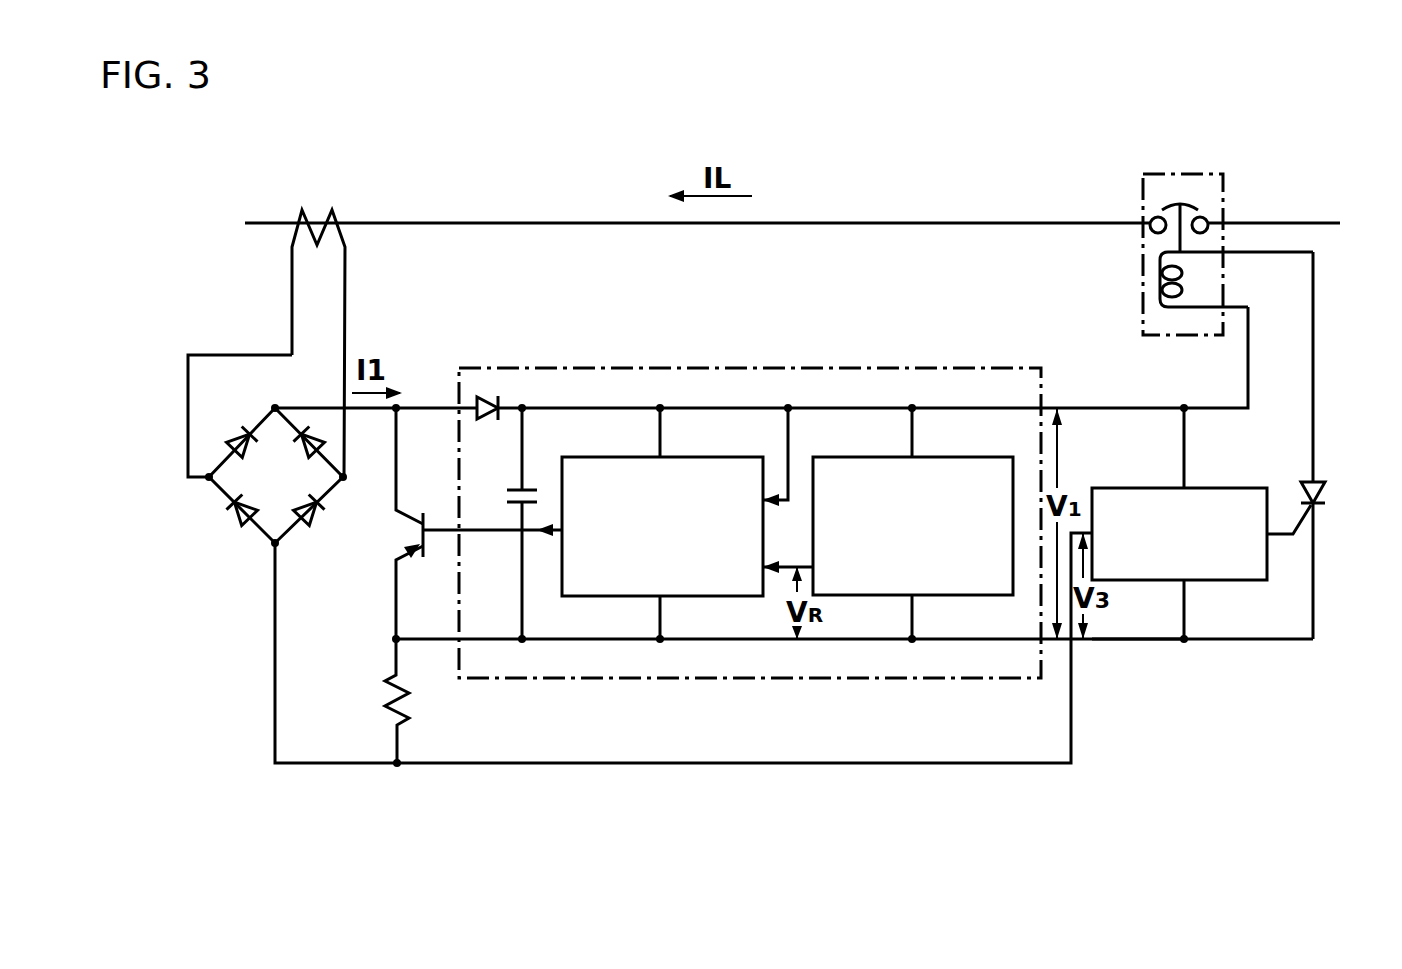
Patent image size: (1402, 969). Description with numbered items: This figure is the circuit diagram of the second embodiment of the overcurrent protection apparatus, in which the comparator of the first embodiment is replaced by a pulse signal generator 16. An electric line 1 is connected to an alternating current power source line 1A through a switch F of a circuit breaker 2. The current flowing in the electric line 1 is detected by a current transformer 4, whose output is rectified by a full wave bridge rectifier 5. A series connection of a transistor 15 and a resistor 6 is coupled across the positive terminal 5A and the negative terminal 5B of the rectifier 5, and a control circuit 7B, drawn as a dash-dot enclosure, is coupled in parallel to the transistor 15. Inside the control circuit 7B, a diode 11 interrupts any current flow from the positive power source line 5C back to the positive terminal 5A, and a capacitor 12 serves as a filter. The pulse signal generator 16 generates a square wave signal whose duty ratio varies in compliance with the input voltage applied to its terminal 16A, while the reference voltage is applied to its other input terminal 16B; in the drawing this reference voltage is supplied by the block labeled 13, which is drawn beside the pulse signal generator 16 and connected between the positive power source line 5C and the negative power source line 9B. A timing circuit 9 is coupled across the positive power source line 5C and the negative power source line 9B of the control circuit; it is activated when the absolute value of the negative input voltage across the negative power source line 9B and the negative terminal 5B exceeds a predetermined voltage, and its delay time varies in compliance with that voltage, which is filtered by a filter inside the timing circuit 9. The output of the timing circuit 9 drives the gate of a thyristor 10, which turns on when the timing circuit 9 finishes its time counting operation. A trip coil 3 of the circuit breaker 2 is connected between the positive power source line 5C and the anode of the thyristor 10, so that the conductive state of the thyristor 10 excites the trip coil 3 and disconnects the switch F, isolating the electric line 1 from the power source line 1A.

The electric line 1 is at (910, 223).
The power source line 1A is at (1283, 223).
The circuit breaker 2 is at (1143, 225).
The switch F is at (1178, 204).
The trip coil 3 is at (1160, 282).
The current transformer 4 is at (340, 223).
The full wave bridge rectifier 5 is at (243, 482).
The positive terminal 5A is at (275, 408).
The negative terminal 5B is at (273, 547).
The positive power source line 5C is at (1127, 408).
The resistor 6 is at (395, 713).
The control circuit 7B is at (672, 368).
The timing circuit 9 is at (1232, 580).
The negative power source line 9B is at (1138, 640).
The thyristor 10 is at (1318, 485).
The diode 11 is at (483, 400).
The capacitor 12 is at (530, 488).
The reference voltage generator 13 is at (942, 457).
The transistor 15 is at (412, 540).
The pulse signal generator 16 is at (732, 588).
The terminal 16A is at (768, 494).
The other input terminal 16B is at (765, 572).